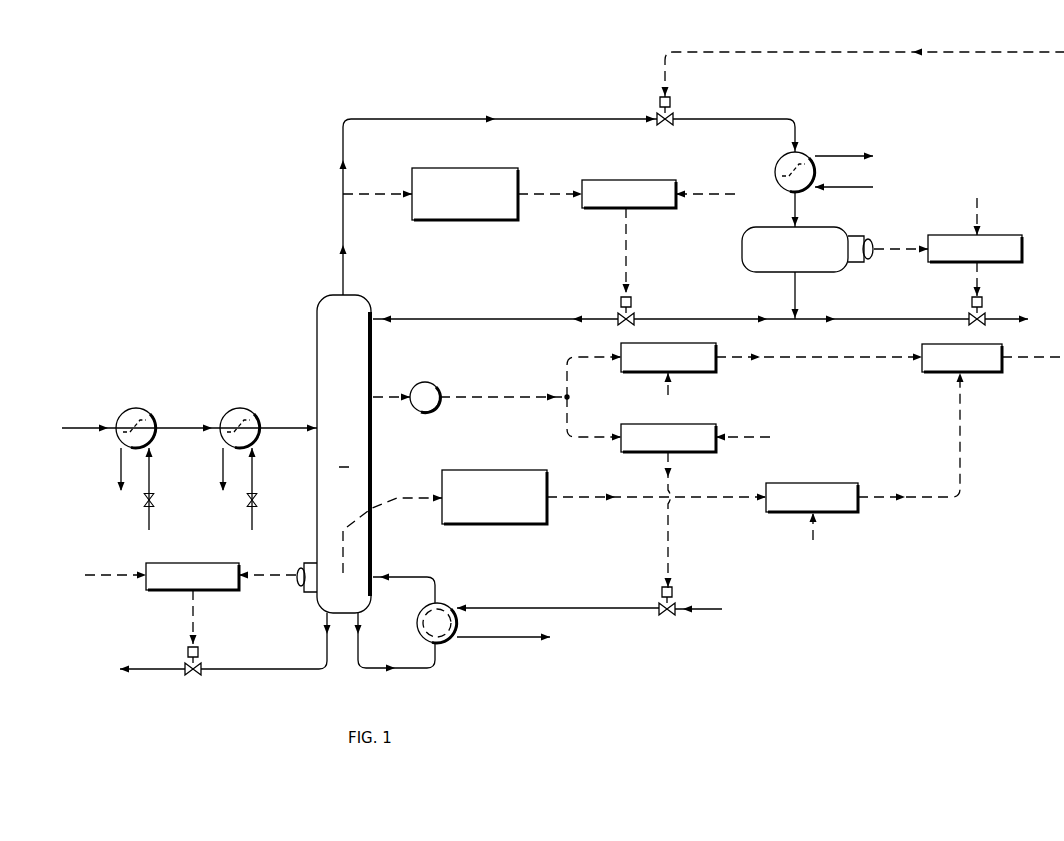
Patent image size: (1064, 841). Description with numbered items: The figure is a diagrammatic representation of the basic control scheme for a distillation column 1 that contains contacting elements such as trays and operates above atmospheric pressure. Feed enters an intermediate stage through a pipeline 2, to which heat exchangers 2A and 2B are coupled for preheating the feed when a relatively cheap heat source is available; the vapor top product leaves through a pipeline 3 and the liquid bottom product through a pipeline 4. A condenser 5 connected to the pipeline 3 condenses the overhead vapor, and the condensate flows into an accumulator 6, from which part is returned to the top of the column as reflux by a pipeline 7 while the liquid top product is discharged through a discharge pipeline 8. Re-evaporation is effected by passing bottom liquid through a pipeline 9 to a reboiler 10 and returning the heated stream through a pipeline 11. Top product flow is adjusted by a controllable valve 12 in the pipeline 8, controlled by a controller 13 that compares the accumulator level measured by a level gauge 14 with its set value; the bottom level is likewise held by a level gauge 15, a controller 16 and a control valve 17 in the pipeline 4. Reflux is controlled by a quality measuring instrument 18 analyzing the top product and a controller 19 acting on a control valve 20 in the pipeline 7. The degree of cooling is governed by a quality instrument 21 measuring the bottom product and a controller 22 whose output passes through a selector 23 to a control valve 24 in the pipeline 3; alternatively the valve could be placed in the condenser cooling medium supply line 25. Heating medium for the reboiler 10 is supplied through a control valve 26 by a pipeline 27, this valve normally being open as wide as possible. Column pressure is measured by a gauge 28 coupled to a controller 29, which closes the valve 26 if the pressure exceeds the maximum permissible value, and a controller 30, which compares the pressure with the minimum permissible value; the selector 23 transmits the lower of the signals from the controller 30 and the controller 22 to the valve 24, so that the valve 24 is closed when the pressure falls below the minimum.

The distillation column 1 is at (344, 454).
The pipeline 2 is at (270, 428).
The heat exchanger 2A is at (120, 410).
The heat exchanger 2B is at (226, 410).
The pipeline 3 is at (428, 119).
The pipeline 4 is at (320, 660).
The condenser 5 is at (778, 158).
The accumulator 6 is at (770, 227).
The pipeline 7 is at (456, 319).
The discharge pipeline 8 is at (998, 319).
The pipeline 9 is at (362, 660).
The reboiler 10 is at (424, 606).
The pipeline 11 is at (396, 577).
The controllable valve 12 is at (969, 313).
The controller 13 is at (992, 235).
The level gauge 14 is at (874, 258).
The level gauge 15 is at (294, 566).
The controller 16 is at (206, 563).
The control valve 17 is at (188, 675).
The quality measuring instrument 18 is at (462, 168).
The controller 19 is at (624, 180).
The control valve 20 is at (618, 315).
The quality instrument 21 is at (492, 470).
The controller 22 is at (814, 483).
The selector 23 is at (985, 372).
The control valve 24 is at (660, 125).
The condenser cooling medium supply line 25 is at (828, 156).
The control valve 26 is at (662, 615).
The pipeline 27 is at (696, 609).
The gauge 28 is at (423, 412).
The controller 29 is at (684, 452).
The controller 30 is at (618, 346).